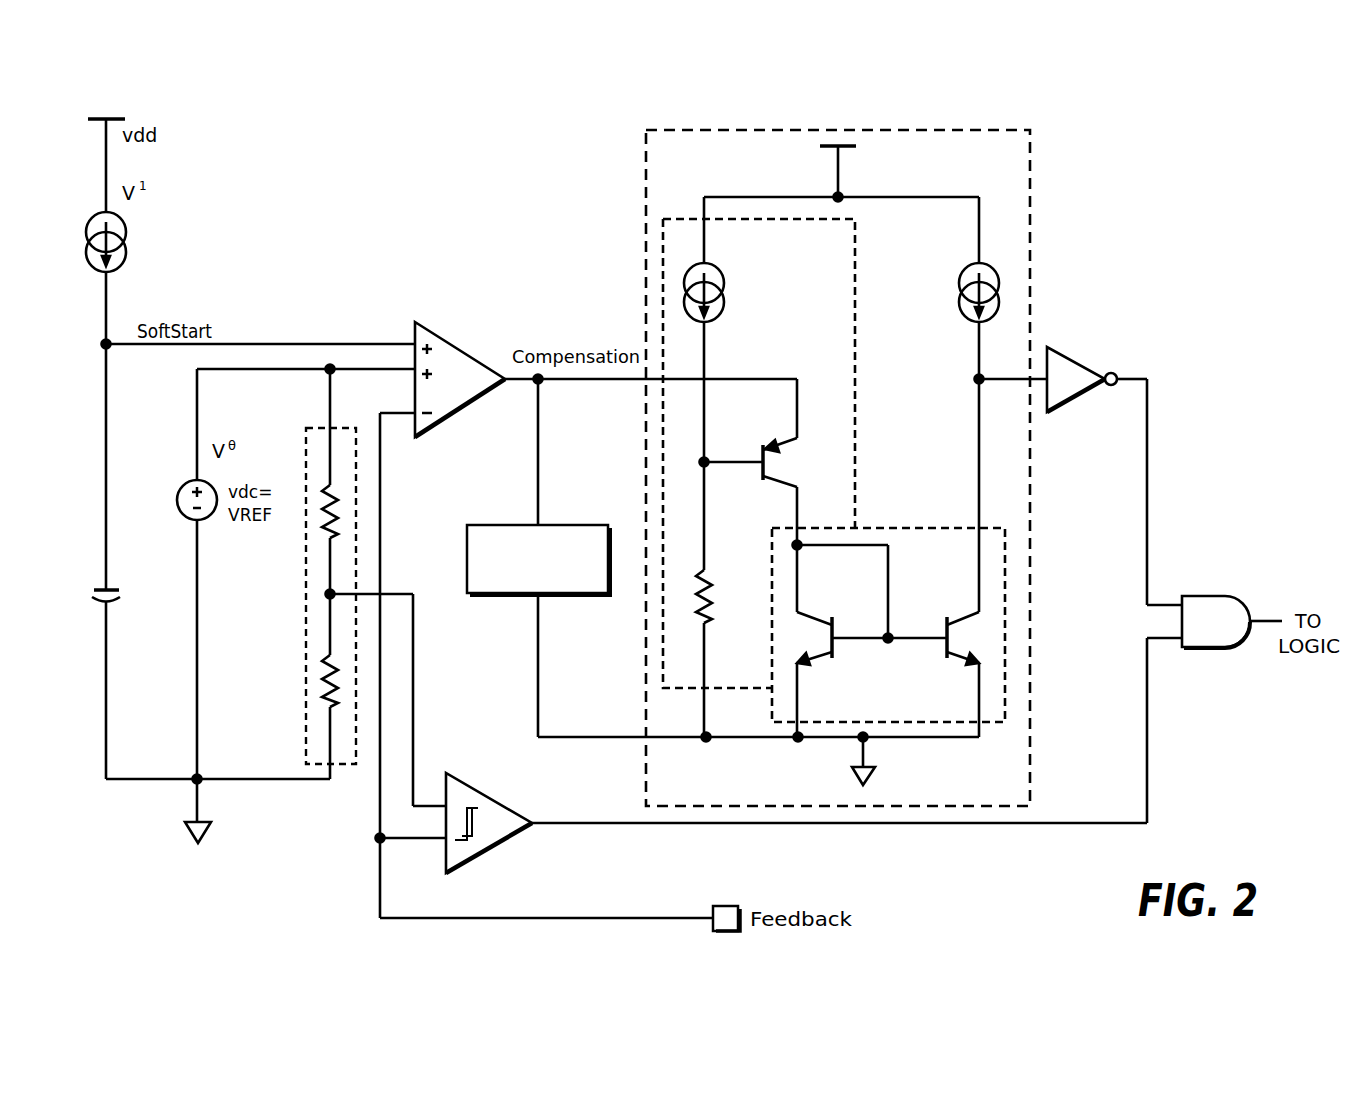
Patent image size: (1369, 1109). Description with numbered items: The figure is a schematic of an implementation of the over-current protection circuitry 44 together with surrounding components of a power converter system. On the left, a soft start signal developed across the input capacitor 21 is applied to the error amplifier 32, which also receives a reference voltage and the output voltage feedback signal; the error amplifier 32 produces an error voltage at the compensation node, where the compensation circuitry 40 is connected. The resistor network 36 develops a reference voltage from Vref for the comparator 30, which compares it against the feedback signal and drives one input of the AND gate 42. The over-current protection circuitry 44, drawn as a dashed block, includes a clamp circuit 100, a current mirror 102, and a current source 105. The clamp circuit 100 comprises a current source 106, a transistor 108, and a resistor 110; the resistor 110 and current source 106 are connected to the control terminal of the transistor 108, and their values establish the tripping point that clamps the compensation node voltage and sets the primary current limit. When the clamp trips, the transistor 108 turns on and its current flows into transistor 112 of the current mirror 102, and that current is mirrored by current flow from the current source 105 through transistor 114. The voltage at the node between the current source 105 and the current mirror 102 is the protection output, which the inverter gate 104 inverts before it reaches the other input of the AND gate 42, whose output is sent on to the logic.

The input capacitor 21 is at (118, 597).
The comparator 30 is at (512, 838).
The error amplifier 32 is at (450, 342).
The resistor network 36 is at (306, 700).
The compensation circuitry 40 is at (520, 525).
The AND gate 42 is at (1212, 650).
The over-current protection circuitry 44 is at (1030, 200).
The clamp circuit 100 is at (856, 320).
The current mirror 102 is at (890, 528).
The inverter gate 104 is at (1083, 357).
The current source 105 is at (960, 284).
The current source 106 is at (726, 282).
The transistor 108 is at (766, 448).
The resistor 110 is at (712, 600).
The transistor 112 is at (832, 620).
The transistor 114 is at (947, 620).